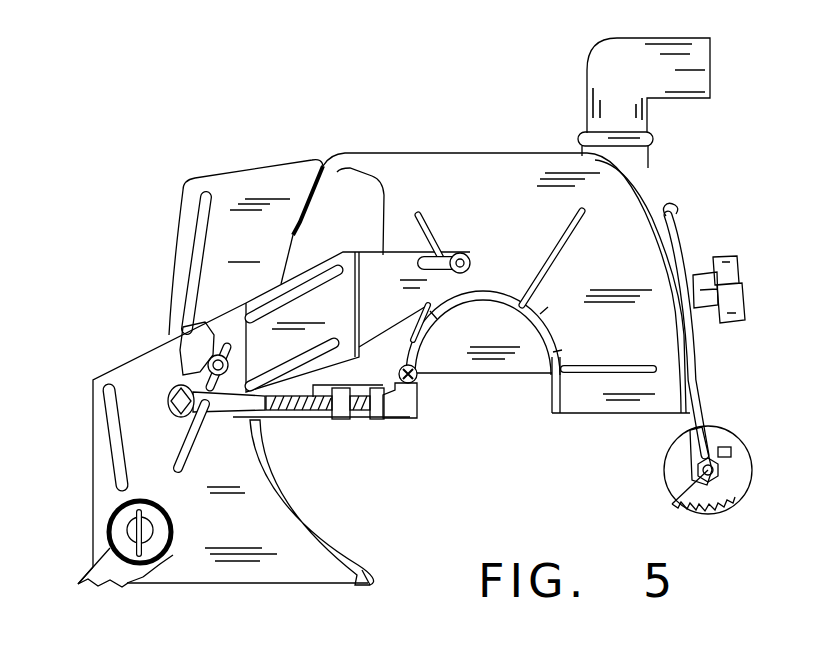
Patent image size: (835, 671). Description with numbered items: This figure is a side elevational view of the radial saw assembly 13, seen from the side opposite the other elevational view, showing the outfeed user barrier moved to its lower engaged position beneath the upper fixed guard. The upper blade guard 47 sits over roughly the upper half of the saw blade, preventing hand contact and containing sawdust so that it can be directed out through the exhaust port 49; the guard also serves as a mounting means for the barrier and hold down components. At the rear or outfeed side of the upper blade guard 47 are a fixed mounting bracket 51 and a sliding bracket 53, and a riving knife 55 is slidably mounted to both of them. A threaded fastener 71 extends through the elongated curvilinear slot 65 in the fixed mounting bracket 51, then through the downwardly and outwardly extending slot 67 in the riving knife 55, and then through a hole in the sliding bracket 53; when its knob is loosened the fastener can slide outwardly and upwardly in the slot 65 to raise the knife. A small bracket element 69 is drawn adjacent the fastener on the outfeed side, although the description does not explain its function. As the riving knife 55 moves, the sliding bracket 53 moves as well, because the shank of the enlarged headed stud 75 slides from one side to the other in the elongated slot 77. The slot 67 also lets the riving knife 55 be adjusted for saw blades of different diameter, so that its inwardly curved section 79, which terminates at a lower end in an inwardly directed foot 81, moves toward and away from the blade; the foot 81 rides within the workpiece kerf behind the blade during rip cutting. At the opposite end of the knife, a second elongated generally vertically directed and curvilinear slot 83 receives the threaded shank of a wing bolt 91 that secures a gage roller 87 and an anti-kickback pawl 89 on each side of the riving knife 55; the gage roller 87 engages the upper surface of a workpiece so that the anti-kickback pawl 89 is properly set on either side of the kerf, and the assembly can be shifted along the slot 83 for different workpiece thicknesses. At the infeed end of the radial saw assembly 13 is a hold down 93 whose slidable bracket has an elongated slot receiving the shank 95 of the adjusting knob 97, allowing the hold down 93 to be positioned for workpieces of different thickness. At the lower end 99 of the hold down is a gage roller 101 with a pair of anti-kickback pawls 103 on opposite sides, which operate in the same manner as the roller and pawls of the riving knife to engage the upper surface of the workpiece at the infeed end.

The radial saw assembly 13 is at (240, 74).
The upper blade guard 47 is at (481, 233).
The exhaust port 49 is at (681, 98).
The fixed mounting bracket 51 is at (246, 214).
The sliding bracket 53 is at (358, 214).
The riving knife 55 is at (223, 470).
The elongated curvilinear slot 65 is at (149, 263).
The downwardly and outwardly extending slot 67 is at (210, 515).
The bracket 69 is at (148, 336).
The threaded fastener 71 is at (140, 356).
The enlarged headed stud 75 is at (452, 184).
The elongated slot 77 is at (422, 175).
The inwardly curved section 79 is at (317, 502).
The inwardly directed foot 81 is at (394, 565).
The second elongated generally vertically directed and curvilinear slot 83 is at (74, 439).
The gage roller 87 is at (101, 532).
The anti-kickback pawl 89 is at (122, 613).
The wing bolt 91 is at (163, 583).
The hold down 93 is at (718, 329).
The shank 95 is at (722, 253).
The adjusting knob 97 is at (753, 289).
The lower end 99 is at (672, 481).
The gage roller 101 is at (737, 470).
The anti-kickback pawl 103 is at (718, 514).